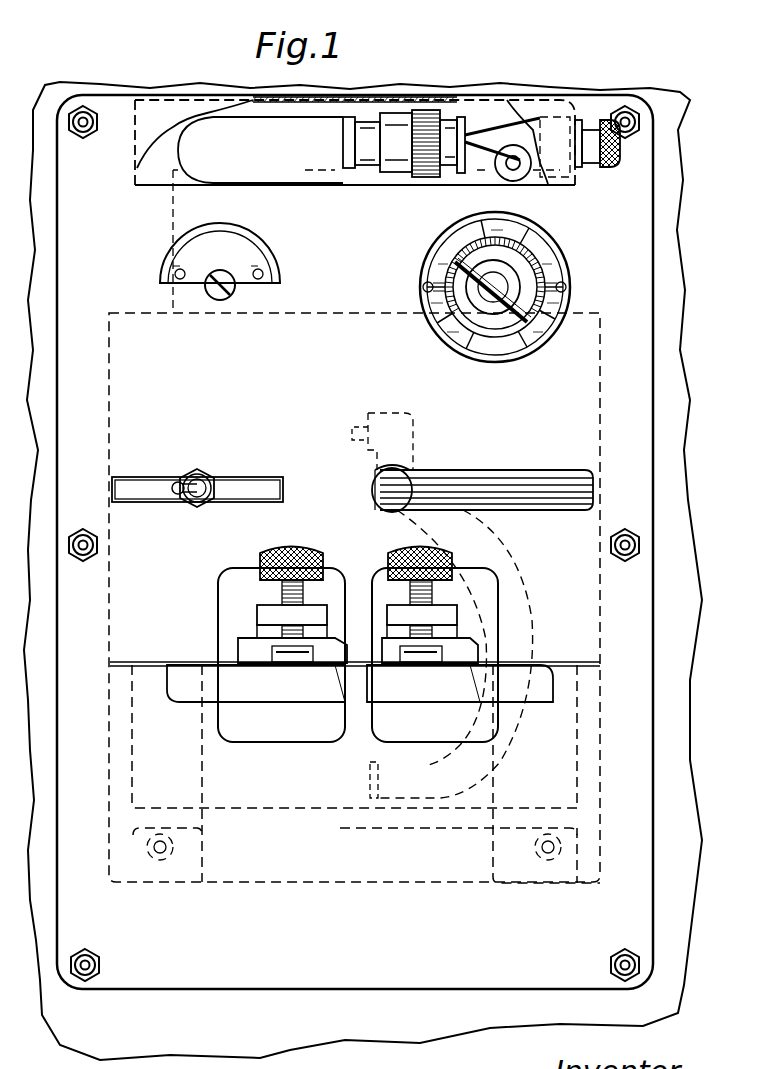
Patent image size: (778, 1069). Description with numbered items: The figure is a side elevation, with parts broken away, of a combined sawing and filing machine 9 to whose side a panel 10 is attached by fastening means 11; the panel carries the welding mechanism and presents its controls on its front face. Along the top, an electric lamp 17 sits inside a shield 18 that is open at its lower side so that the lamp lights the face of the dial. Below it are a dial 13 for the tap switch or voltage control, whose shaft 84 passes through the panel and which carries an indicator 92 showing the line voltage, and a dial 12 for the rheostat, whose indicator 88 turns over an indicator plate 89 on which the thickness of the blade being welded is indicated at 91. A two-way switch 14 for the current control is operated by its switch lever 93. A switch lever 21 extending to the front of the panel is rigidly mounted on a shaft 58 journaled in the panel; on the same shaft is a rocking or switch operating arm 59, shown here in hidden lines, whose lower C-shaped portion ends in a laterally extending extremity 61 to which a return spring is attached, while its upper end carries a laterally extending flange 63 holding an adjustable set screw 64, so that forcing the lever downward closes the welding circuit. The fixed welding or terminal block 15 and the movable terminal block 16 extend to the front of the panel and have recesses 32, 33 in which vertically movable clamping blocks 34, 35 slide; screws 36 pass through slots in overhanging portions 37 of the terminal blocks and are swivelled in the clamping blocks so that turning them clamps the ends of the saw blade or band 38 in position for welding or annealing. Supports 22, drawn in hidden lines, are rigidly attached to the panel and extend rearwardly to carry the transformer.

The metal sawing machine 9 is at (662, 731).
The panel 10 is at (592, 95).
The fastening means 11 is at (632, 120).
The dial 12 is at (494, 297).
The dial 13 is at (280, 256).
The two-way switch 14 is at (200, 498).
The fixed welding or terminal block 15 is at (383, 730).
The movable terminal block 16 is at (254, 730).
The electric lamp 17 is at (300, 110).
The shield 18 is at (170, 110).
The switch lever 21 is at (557, 450).
The supports 22 is at (112, 772).
The recess 32 is at (260, 632).
The recess 33 is at (460, 630).
The clamping block 34 is at (245, 643).
The clamping block 35 is at (467, 652).
The screws 36 is at (393, 550).
The overhanging portions 37 is at (393, 613).
The saw blade or band 38 is at (590, 645).
The shaft 58 is at (377, 468).
The rocking or switch operating arm 59 is at (520, 568).
The laterally extending extremity 61 is at (370, 780).
The laterally extending flange 63 is at (373, 412).
The set screw 64 is at (360, 427).
The shaft 84 is at (482, 306).
The indicator 88 is at (540, 278).
The indicator plate 89 is at (432, 246).
The blade thickness indication 91 is at (480, 226).
The indicator 92 is at (210, 292).
The switch lever 93 is at (180, 483).